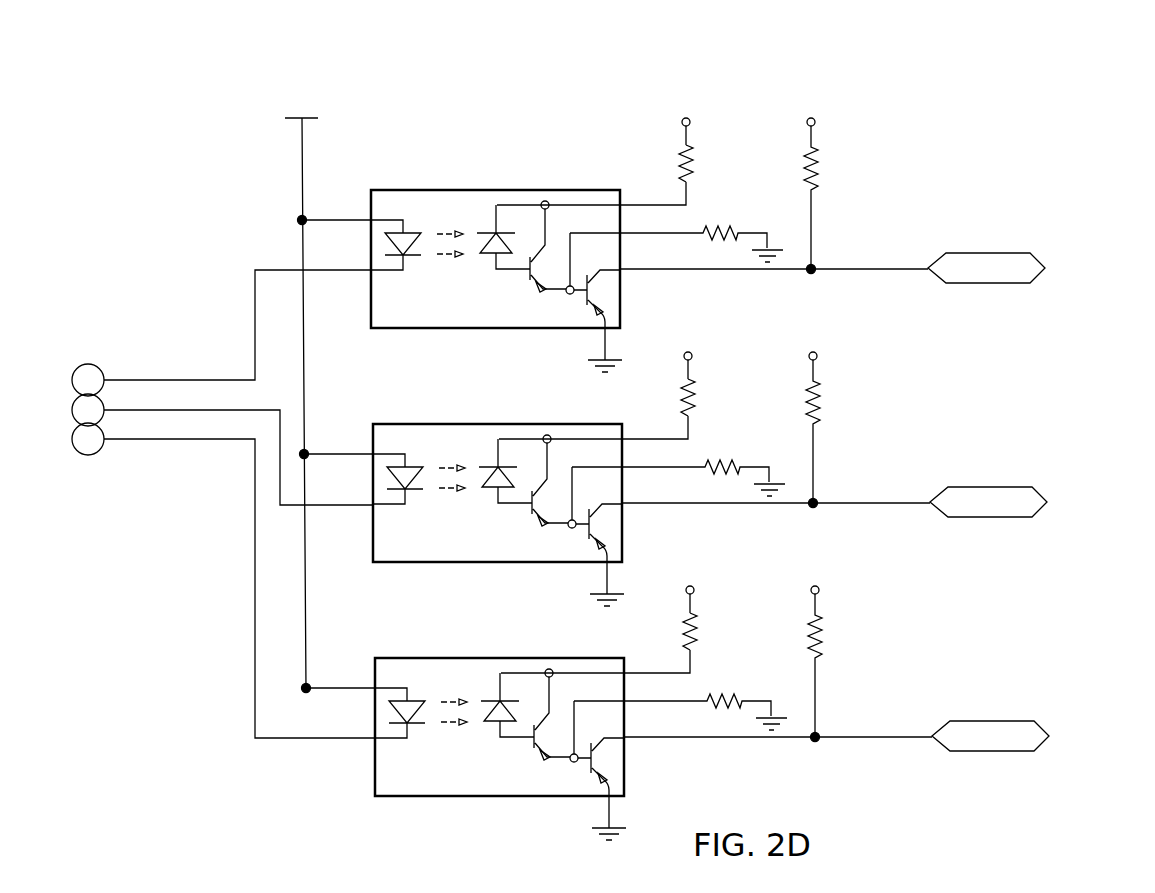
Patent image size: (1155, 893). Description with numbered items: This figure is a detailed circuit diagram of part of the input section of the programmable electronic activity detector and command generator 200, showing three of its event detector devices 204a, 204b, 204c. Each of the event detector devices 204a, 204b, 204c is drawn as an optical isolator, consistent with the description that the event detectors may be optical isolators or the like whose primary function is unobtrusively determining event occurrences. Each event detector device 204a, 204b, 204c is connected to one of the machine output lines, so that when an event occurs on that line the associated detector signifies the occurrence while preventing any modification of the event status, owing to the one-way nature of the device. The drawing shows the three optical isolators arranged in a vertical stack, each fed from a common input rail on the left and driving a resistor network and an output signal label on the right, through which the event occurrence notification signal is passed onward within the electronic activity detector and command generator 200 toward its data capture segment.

The programmable electronic activity detector and command generator 200 is at (611, 467).
The event detector device 204a is at (491, 733).
The event detector device 204b is at (489, 499).
The event detector device 204c is at (483, 207).